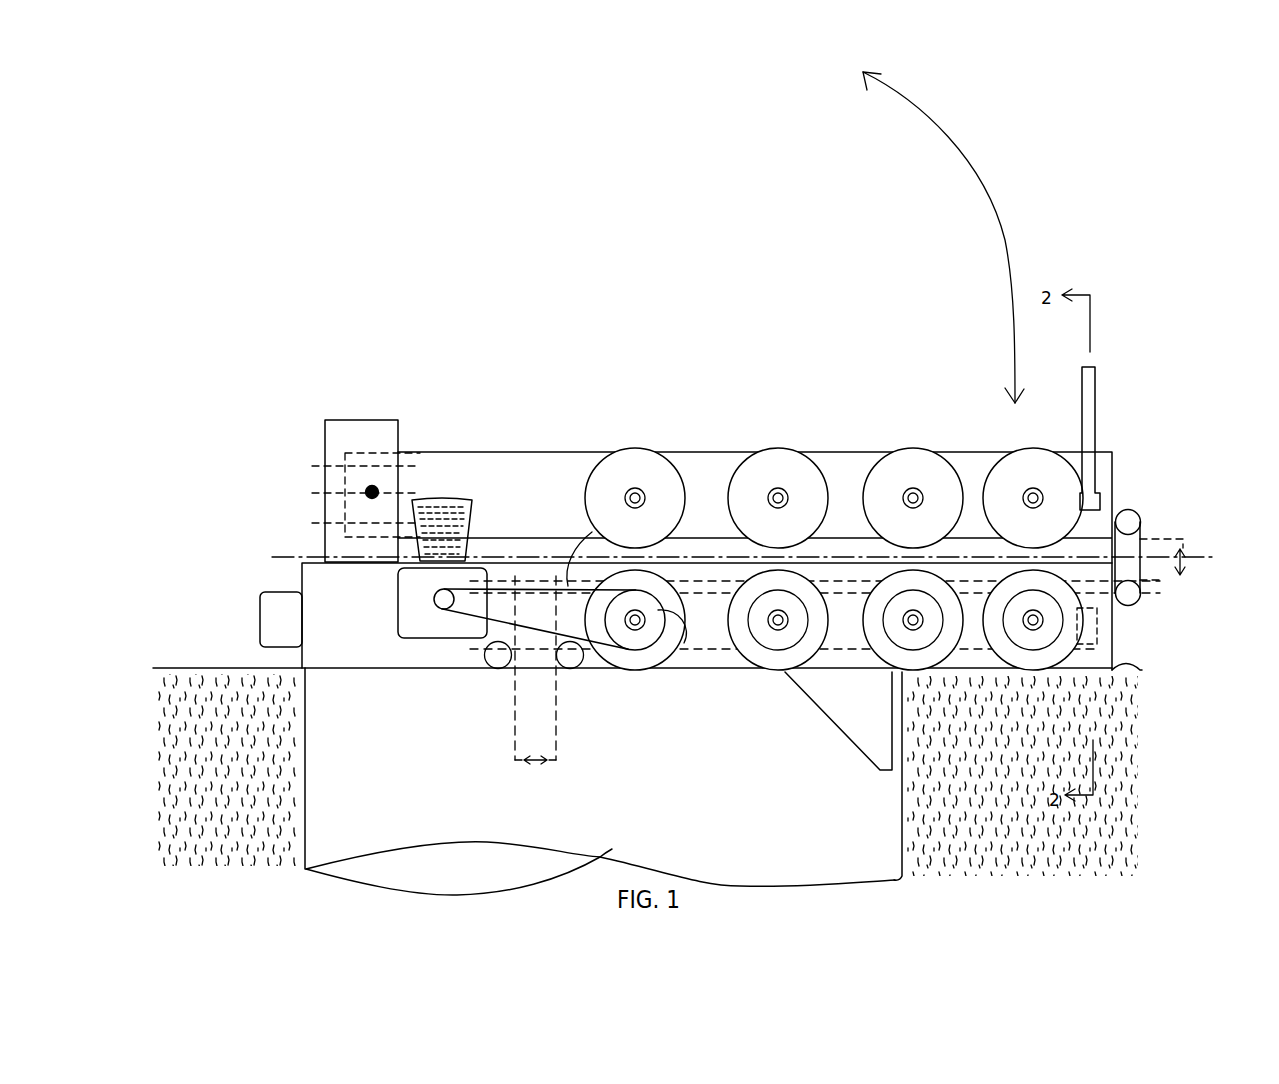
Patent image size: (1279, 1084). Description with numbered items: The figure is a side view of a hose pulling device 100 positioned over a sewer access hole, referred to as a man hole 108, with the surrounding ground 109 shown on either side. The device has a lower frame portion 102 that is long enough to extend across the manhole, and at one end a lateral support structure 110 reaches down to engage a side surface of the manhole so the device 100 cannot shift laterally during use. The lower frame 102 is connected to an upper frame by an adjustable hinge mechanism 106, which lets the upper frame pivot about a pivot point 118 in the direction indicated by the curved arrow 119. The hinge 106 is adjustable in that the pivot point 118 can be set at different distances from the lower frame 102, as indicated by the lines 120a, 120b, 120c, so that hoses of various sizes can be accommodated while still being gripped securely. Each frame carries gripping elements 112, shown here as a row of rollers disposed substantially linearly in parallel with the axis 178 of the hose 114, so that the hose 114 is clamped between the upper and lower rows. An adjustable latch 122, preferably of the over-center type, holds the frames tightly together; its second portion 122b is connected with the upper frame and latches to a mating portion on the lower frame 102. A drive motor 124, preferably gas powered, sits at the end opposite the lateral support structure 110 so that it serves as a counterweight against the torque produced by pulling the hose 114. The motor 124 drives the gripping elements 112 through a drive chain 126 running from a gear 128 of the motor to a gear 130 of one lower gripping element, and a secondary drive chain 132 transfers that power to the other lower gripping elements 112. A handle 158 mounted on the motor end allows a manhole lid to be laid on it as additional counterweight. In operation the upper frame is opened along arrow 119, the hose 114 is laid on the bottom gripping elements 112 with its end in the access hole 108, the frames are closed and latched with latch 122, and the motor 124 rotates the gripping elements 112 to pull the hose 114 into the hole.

The hose pulling device 100 is at (758, 320).
The lower frame portion 102 is at (646, 775).
The hinge mechanism 106 is at (360, 430).
The man hole 108 is at (307, 842).
The ground 109 is at (1140, 672).
The lateral support structure 110 is at (892, 713).
The gripping element 112 is at (638, 449).
The hose 114 is at (1148, 581).
The pivot point 118 is at (379, 492).
The curved arrow 119 is at (973, 160).
The pivot point location line 120a is at (322, 524).
The pivot point location line 120b is at (322, 492).
The pivot point location line 120c is at (322, 465).
The adjustable latch 122 is at (1093, 613).
The second latch portion 122b is at (1096, 428).
The drive motor 124 is at (449, 499).
The drive chain 126 is at (462, 614).
The gear of the motor 128 is at (446, 590).
The gear of the gripping element 130 is at (684, 643).
The secondary drive chain 132 is at (668, 612).
The handle 158 is at (260, 622).
The axis of the hose 178 is at (272, 557).